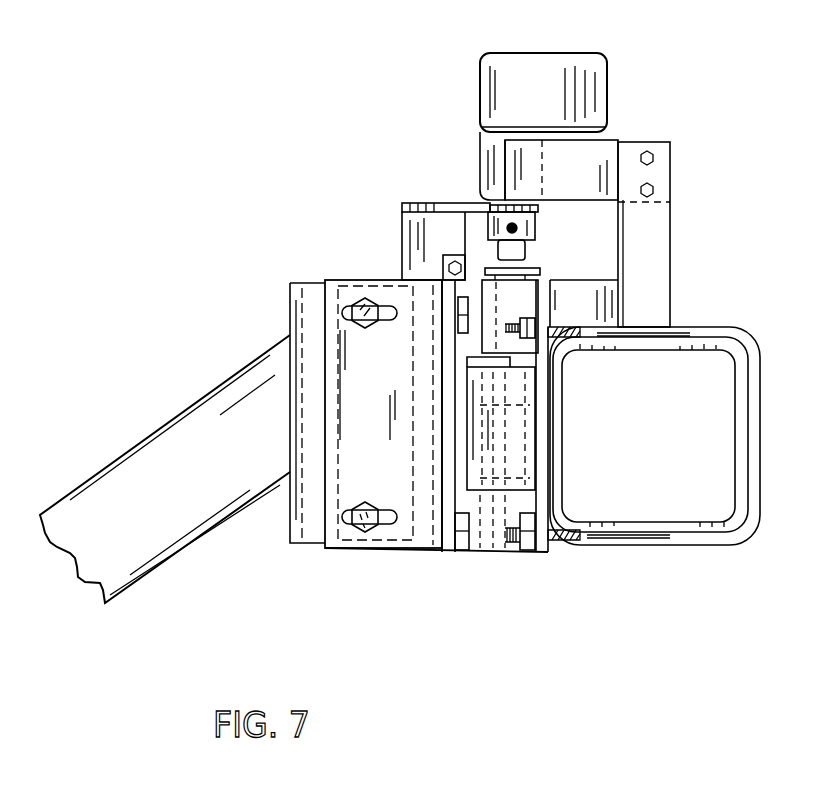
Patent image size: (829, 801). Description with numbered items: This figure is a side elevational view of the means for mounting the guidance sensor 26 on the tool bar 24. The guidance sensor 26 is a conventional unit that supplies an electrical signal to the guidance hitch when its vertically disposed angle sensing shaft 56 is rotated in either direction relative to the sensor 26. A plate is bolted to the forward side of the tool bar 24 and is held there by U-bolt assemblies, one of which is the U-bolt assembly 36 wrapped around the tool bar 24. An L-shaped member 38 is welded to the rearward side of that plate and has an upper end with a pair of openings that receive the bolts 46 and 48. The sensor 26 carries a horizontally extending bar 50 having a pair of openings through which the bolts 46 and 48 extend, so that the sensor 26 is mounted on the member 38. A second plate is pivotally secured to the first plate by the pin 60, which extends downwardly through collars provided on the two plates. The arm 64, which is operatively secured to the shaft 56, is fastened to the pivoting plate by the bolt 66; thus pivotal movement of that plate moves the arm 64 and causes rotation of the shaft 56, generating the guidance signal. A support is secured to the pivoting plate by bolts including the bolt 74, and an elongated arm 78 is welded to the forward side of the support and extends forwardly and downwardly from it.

The tool bar 24 is at (692, 531).
The guidance sensor 26 is at (610, 65).
The U-bolt assembly 36 is at (650, 544).
The L-shaped member 38 is at (655, 270).
The bolt 46 is at (655, 158).
The bolt 48 is at (655, 191).
The horizontally extending bar 50 is at (589, 153).
The angle sensing shaft 56 is at (520, 250).
The pin 60 is at (520, 297).
The arm 64 is at (438, 240).
The bolt 66 is at (447, 266).
The bolt 74 is at (465, 530).
The elongated arm 78 is at (206, 486).